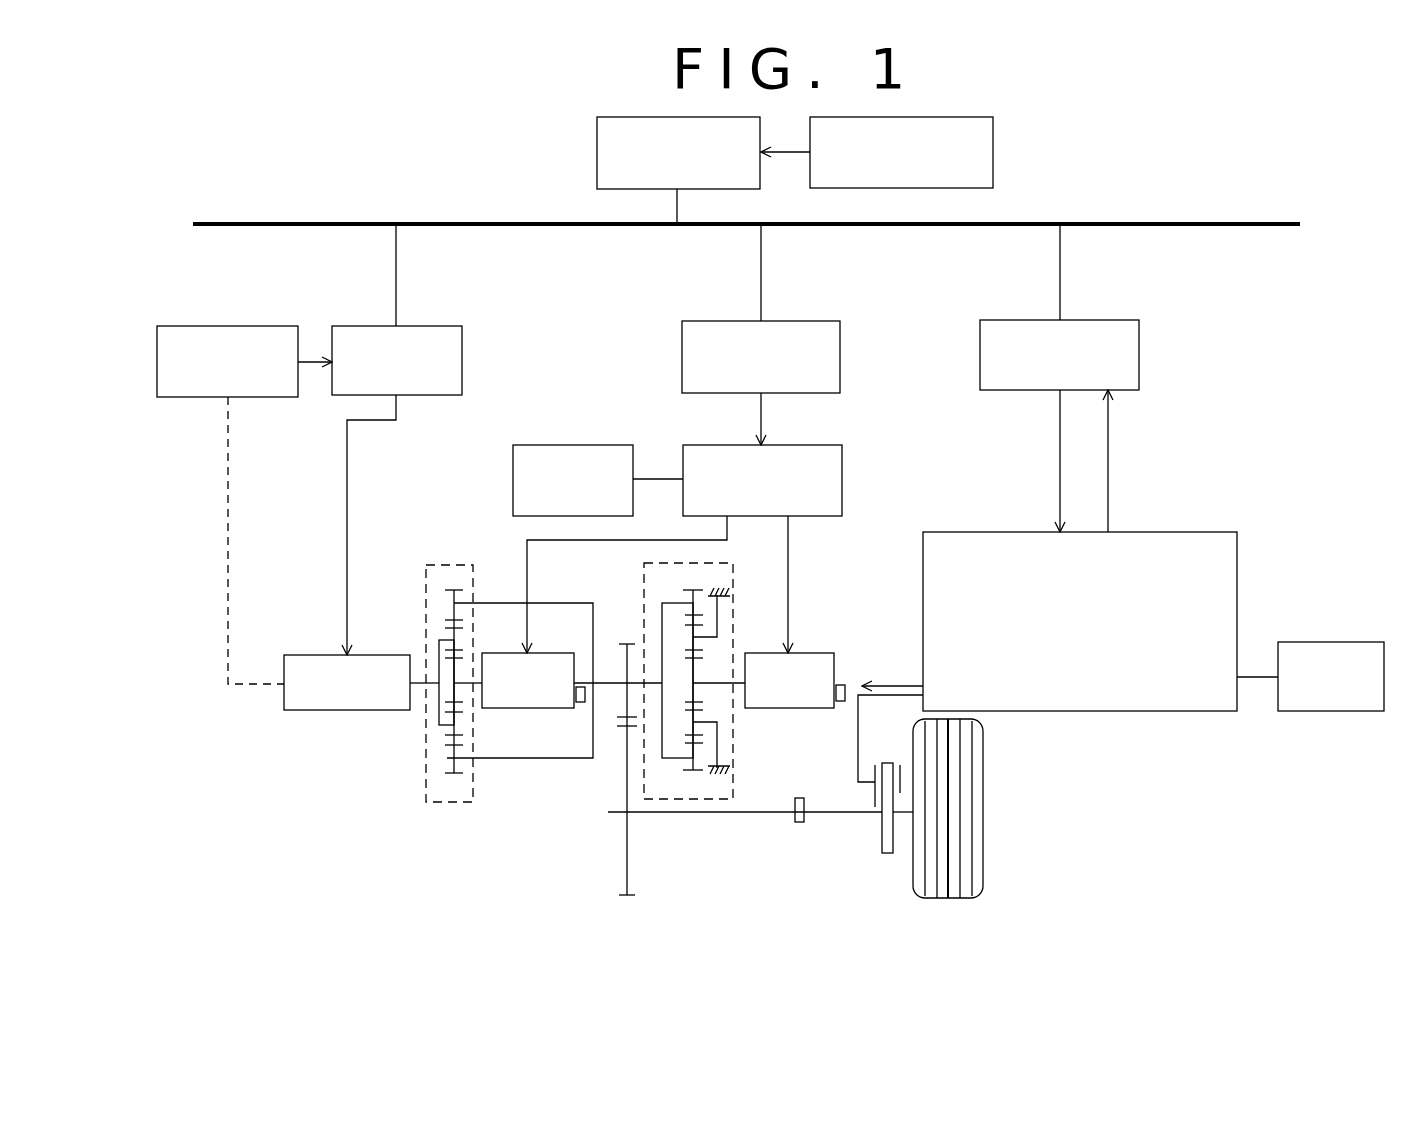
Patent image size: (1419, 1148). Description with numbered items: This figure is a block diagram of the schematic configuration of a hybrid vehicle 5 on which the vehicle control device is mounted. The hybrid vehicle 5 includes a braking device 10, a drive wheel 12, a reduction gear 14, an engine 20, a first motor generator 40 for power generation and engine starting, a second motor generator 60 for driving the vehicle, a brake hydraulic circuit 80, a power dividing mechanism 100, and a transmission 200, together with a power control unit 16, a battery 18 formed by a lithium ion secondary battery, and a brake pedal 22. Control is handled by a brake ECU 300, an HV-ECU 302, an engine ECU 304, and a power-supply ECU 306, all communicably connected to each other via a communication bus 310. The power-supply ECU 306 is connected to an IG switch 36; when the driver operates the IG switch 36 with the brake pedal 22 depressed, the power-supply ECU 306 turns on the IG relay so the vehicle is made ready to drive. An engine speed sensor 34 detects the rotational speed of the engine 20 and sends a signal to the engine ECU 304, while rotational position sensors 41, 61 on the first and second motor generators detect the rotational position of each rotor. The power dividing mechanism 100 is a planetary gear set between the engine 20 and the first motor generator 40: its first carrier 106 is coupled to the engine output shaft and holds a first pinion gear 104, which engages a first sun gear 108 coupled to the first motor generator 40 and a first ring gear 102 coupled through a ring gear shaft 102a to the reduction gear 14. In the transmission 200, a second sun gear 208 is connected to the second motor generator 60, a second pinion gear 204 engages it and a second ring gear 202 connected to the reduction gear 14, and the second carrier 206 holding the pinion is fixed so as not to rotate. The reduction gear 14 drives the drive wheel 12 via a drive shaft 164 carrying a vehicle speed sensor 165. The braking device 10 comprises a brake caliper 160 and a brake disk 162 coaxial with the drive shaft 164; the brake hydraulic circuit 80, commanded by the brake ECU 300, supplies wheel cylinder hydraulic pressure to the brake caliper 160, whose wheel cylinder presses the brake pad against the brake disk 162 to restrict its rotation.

The hybrid vehicle 5 is at (1259, 161).
The communication bus 310 is at (1250, 222).
The power-supply ECU 306 is at (597, 150).
The IG switch 36 is at (993, 153).
The engine speed sensor 34 is at (270, 325).
The engine ECU 304 is at (424, 325).
The HV-ECU 302 is at (707, 321).
The brake ECU 300 is at (1095, 320).
The battery 18 is at (584, 445).
The power control unit 16 is at (805, 445).
The brake hydraulic circuit 80 is at (1199, 532).
The brake pedal 22 is at (1343, 642).
The engine 20 is at (365, 655).
The power dividing mechanism 100 is at (469, 654).
The first carrier 106 is at (456, 647).
The first sun gear 108 is at (455, 696).
The first pinion gear 104 is at (444, 730).
The first ring gear 102 is at (444, 768).
The ring gear shaft 102a is at (593, 682).
The first motor generator 40 is at (540, 653).
The rotational position sensor 41 is at (580, 702).
The reduction gear 14 is at (600, 800).
The transmission 200 is at (752, 693).
The second carrier 206 is at (718, 612).
The second sun gear 208 is at (697, 670).
The second pinion gear 204 is at (702, 713).
The second ring gear 202 is at (692, 762).
The second motor generator 60 is at (834, 654).
The rotational position sensor 61 is at (840, 701).
The drive shaft 164 is at (740, 813).
The vehicle speed sensor 165 is at (800, 822).
The braking device 10 is at (851, 782).
The brake disk 162 is at (885, 763).
The brake caliper 160 is at (882, 793).
The drive wheel 12 is at (983, 868).